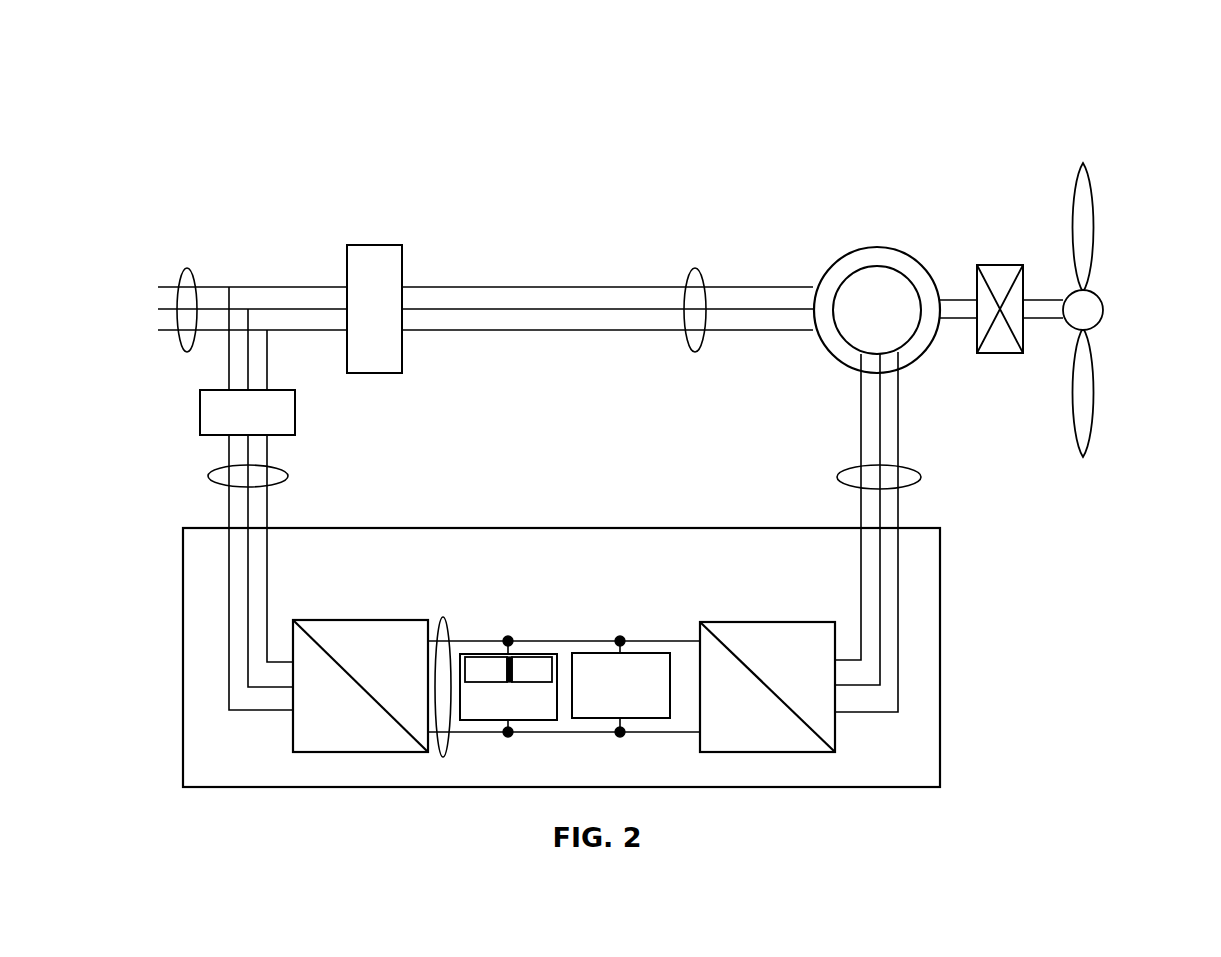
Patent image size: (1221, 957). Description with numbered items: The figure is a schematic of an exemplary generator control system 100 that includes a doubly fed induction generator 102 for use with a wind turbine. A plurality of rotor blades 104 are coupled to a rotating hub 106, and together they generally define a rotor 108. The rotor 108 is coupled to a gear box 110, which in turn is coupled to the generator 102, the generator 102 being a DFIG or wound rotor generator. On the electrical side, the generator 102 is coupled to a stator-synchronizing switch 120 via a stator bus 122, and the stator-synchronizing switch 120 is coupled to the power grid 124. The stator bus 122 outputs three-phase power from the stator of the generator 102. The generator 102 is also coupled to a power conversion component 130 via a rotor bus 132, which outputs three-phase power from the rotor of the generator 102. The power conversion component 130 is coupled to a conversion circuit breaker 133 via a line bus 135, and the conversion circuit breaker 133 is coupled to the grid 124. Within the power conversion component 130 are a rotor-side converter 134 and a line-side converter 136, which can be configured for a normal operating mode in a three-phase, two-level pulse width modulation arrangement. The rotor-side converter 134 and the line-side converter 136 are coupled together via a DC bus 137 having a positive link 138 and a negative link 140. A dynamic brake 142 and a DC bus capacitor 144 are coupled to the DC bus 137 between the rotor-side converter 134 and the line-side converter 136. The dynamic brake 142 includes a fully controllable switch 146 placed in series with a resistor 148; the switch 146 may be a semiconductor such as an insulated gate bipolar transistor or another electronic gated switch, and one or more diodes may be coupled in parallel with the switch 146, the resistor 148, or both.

The generator control system 100 is at (222, 120).
The generator 102 is at (877, 247).
The rotor blades 104 is at (1097, 222).
The rotating hub 106 is at (1103, 310).
The rotor 108 is at (1140, 162).
The gear box 110 is at (999, 265).
The stator-synchronizing switch 120 is at (372, 245).
The stator bus 122 is at (695, 268).
The power grid 124 is at (188, 268).
The power conversion component 130 is at (940, 658).
The rotor bus 132 is at (921, 477).
The conversion circuit breaker 133 is at (295, 413).
The rotor-side converter 134 is at (835, 735).
The line bus 135 is at (208, 476).
The line-side converter 136 is at (293, 738).
The DC bus 137 is at (443, 617).
The positive link 138 is at (565, 641).
The negative link 140 is at (563, 732).
The dynamic brake 142 is at (508, 686).
The DC bus capacitor 144 is at (621, 686).
The fully controllable switch 146 is at (486, 669).
The resistor 148 is at (532, 669).